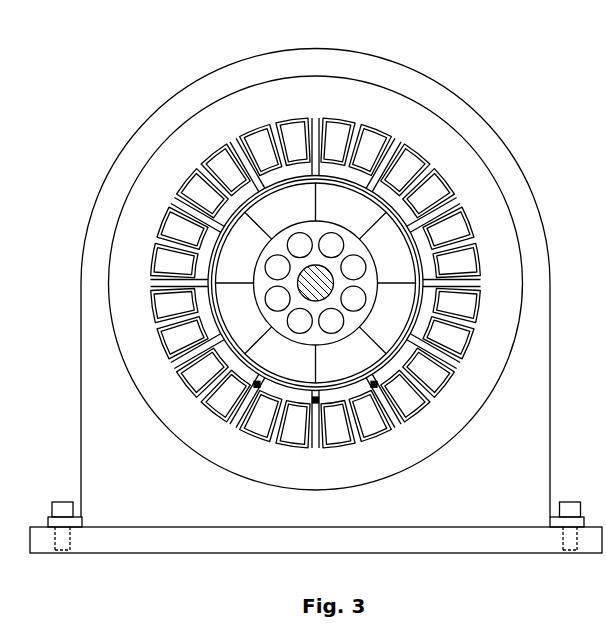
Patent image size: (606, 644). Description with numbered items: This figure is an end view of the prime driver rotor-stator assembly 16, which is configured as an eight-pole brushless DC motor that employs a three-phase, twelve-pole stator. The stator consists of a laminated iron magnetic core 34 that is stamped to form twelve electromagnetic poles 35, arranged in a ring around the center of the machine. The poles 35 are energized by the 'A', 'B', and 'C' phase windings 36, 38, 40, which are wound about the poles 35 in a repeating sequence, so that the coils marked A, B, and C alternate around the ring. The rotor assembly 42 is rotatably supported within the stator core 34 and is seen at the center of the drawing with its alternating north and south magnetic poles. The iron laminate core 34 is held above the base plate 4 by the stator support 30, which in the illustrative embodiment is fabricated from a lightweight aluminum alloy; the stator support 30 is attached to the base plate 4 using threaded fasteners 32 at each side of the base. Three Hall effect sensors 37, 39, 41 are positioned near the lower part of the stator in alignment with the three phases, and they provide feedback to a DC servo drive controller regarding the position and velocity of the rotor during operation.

The base plate 4 is at (458, 553).
The prime driver rotor-stator assembly 16 is at (316, 328).
The stator support 30 is at (81, 360).
The threaded fasteners 32 is at (63, 502).
The laminated iron magnetic core 34 is at (160, 440).
The electromagnetic poles 35 is at (153, 288).
The 'A' phase winding 36 is at (330, 118).
The Hall effect sensor 37 is at (256, 390).
The 'B' phase winding 38 is at (383, 128).
The Hall effect sensor 39 is at (315, 404).
The 'C' phase winding 40 is at (472, 210).
The Hall effect sensor 41 is at (376, 391).
The rotor assembly 42 is at (423, 283).